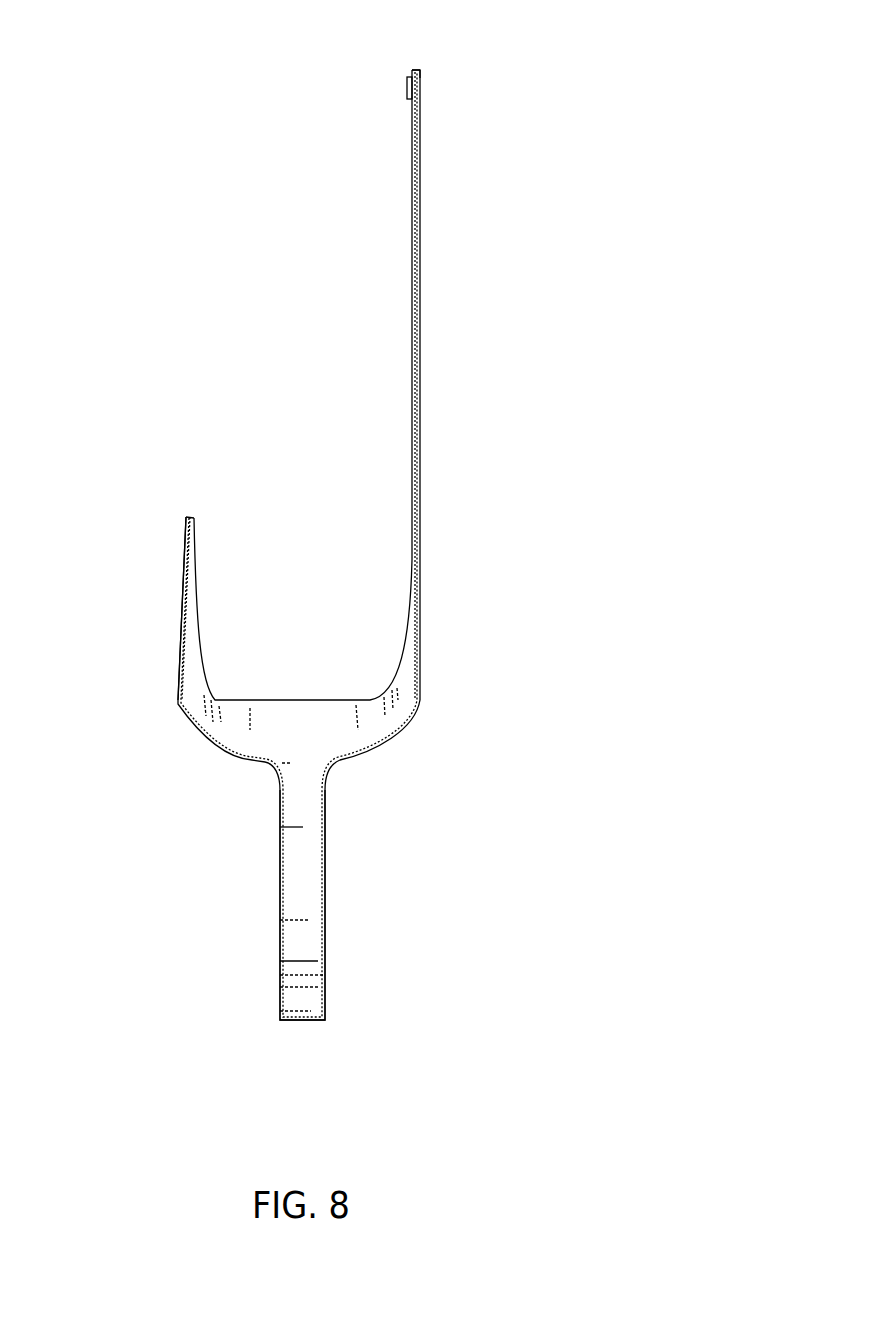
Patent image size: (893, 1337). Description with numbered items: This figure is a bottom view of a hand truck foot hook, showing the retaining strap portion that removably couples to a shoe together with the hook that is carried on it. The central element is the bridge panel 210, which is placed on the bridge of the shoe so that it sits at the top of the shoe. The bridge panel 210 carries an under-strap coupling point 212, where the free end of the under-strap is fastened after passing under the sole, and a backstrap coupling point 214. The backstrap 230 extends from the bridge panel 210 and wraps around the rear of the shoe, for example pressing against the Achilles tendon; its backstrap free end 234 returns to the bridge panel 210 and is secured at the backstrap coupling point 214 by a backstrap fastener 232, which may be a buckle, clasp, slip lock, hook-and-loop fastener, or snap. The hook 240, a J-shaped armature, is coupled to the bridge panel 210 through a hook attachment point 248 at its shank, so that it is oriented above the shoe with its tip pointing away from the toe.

The bridge panel 210 is at (233, 733).
The under-strap coupling point 212 is at (178, 665).
The backstrap coupling point 214 is at (185, 517).
The backstrap 230 is at (419, 347).
The backstrap fastener 232 is at (405, 88).
The backstrap free end 234 is at (418, 70).
The hook 240 is at (385, 860).
The hook attachment point 248 is at (298, 880).